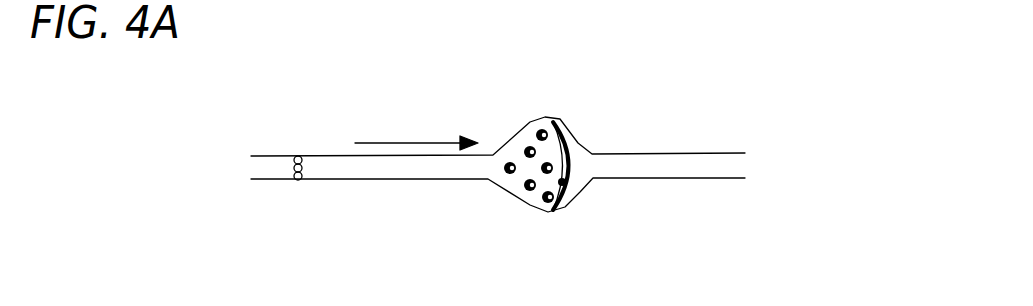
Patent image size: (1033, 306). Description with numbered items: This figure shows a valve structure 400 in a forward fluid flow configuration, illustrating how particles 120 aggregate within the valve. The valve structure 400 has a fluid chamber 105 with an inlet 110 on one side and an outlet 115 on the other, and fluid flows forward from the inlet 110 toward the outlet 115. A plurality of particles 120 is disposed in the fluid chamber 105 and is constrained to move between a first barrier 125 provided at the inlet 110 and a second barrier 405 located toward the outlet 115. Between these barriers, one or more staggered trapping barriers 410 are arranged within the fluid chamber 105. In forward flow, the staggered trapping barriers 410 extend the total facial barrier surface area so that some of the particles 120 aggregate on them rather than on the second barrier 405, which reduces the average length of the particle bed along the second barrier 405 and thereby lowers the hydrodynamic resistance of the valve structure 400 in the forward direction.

The valve structure 400 is at (624, 74).
The fluid chamber 105 is at (467, 202).
The inlet 110 is at (262, 170).
The outlet 115 is at (662, 173).
The particles 120 is at (507, 165).
The first barrier 125 is at (297, 178).
The second barrier 405 is at (568, 168).
The staggered trapping barriers 410 is at (532, 147).